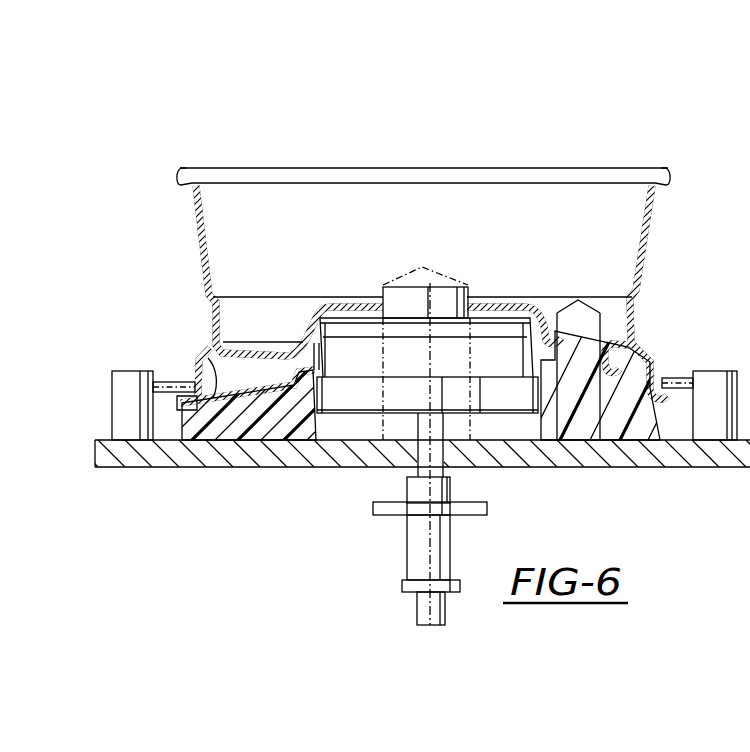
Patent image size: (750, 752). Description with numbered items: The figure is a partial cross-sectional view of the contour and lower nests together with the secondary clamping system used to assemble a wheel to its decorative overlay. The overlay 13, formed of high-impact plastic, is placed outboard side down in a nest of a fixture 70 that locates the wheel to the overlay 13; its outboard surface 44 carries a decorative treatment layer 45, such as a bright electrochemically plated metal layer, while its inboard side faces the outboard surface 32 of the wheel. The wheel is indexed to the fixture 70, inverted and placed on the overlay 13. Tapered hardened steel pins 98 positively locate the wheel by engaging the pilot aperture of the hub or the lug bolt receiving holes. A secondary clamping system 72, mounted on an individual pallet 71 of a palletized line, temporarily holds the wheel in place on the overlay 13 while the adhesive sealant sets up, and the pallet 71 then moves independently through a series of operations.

The fixture 70 is at (688, 162).
The overlay 13 is at (203, 360).
The outboard surface of the wheel 32 is at (303, 347).
The tapered hardened steel pins 98 is at (553, 298).
The outboard surface of the overlay 44 is at (240, 400).
The decorative treatment layer 45 is at (266, 402).
The secondary clamping system 72 is at (118, 392).
The pallet 71 is at (178, 474).